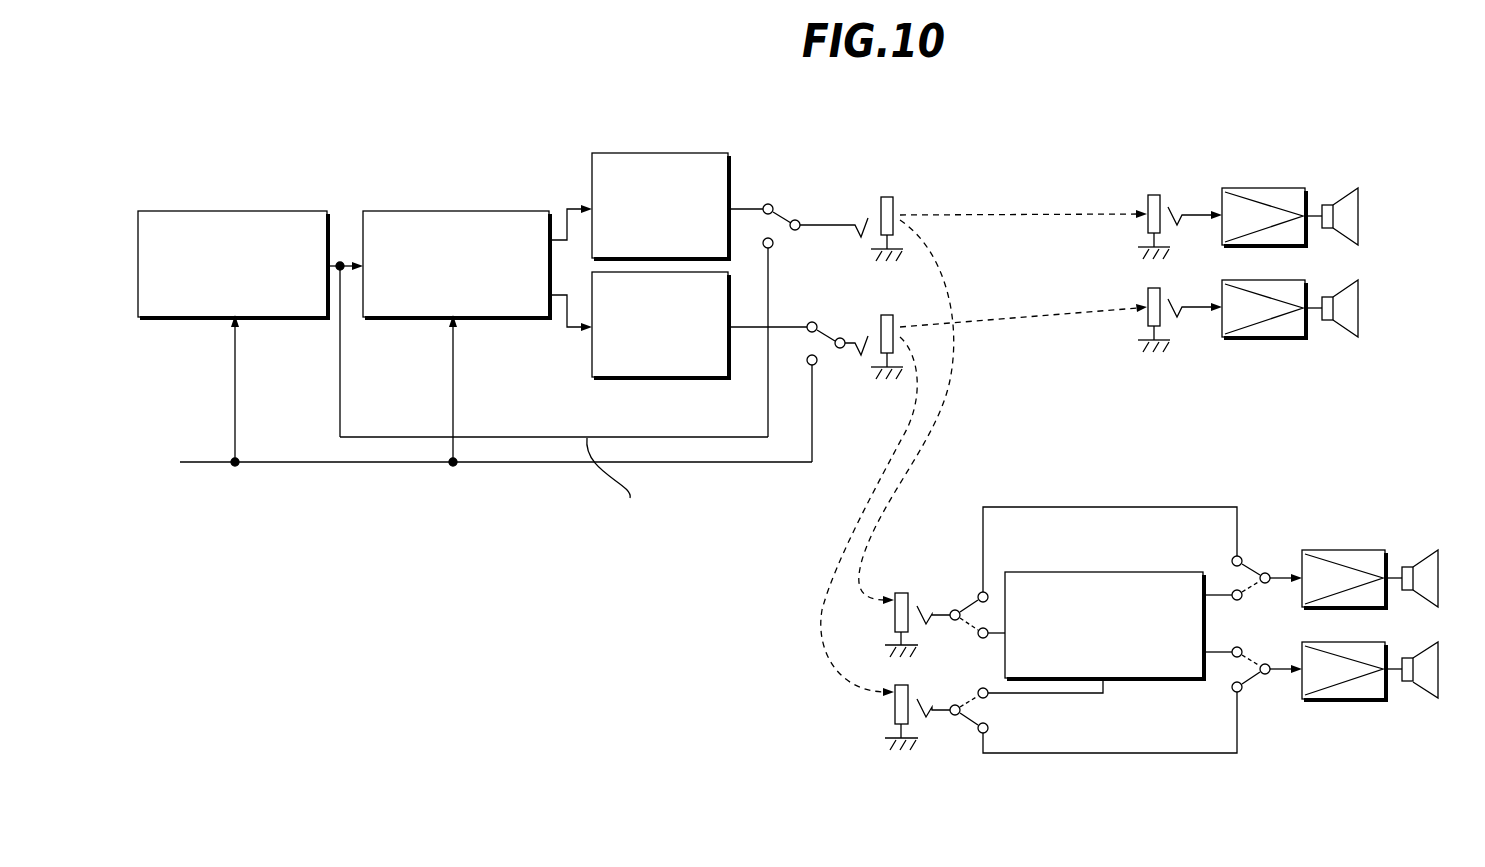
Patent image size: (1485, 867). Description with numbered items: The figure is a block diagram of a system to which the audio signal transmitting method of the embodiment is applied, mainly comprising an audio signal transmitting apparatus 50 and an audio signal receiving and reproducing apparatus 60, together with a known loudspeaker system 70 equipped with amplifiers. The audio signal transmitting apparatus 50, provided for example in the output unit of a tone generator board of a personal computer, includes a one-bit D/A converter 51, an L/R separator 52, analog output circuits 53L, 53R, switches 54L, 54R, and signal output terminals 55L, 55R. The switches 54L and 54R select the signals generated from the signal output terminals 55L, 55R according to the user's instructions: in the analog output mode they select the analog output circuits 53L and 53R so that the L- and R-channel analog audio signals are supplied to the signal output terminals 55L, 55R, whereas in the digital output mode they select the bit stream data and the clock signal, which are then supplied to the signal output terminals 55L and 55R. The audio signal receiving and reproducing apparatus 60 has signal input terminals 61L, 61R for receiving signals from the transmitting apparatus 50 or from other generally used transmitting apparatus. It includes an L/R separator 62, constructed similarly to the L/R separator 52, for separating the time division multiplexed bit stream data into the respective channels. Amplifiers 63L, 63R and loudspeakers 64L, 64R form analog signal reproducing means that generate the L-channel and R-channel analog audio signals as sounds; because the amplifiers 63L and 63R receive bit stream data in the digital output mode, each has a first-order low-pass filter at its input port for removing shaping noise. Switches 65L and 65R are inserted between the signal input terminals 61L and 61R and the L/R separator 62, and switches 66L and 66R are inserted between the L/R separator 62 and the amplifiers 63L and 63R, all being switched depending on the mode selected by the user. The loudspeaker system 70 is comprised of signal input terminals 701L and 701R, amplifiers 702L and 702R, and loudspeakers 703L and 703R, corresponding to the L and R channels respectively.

The audio signal transmitting apparatus 50 is at (358, 506).
The one-bit D/A converter 51 is at (293, 211).
The L/R separator 52 is at (510, 211).
The analog output circuit 53L is at (697, 153).
The analog output circuit 53R is at (633, 378).
The switch 54L is at (788, 208).
The switch 54R is at (830, 322).
The signal output terminal 55L is at (889, 196).
The signal output terminal 55R is at (862, 372).
The audio signal receiving and reproducing apparatus 60 is at (1156, 777).
The signal input terminal 61L is at (903, 593).
The signal input terminal 61R is at (910, 708).
The L/R separator 62 is at (1140, 572).
The amplifier 63L is at (1342, 550).
The amplifier 63R is at (1342, 698).
The loudspeaker 64L is at (1428, 550).
The loudspeaker 64R is at (1428, 698).
The switch 65L is at (966, 595).
The switch 65R is at (990, 716).
The switch 66L is at (1250, 570).
The switch 66R is at (1255, 685).
The loudspeaker system equipped with amplifiers 70 is at (1263, 417).
The signal input terminal 701L is at (1155, 194).
The signal input terminal 701R is at (1162, 310).
The amplifier 702L is at (1263, 189).
The amplifier 702R is at (1263, 338).
The loudspeaker 703L is at (1350, 189).
The loudspeaker 703R is at (1348, 338).